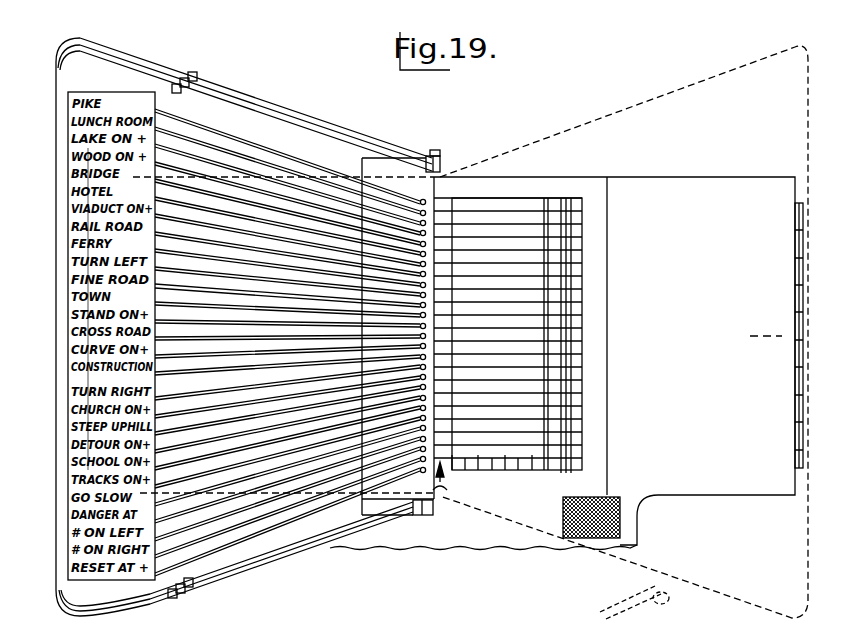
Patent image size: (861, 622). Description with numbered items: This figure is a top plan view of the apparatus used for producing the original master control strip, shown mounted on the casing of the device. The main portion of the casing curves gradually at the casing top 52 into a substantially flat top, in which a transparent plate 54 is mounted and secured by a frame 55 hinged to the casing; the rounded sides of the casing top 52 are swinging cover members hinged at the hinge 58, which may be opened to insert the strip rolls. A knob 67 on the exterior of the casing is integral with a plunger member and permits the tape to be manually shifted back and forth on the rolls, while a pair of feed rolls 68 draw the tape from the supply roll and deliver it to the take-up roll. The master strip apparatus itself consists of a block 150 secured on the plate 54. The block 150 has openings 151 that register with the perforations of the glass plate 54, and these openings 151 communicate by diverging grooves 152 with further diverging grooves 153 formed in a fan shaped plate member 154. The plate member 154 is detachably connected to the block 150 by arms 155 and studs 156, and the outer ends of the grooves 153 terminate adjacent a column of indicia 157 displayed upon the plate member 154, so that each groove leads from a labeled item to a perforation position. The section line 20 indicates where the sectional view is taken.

The section line 20- 20 is at (52, 337).
The casing top 52 is at (752, 176).
The transparent plate 54 is at (600, 313).
The frame 55 is at (606, 360).
The hinge 58 is at (800, 250).
The knob 67 is at (618, 525).
The feed rolls 68 is at (575, 250).
The block 150 is at (440, 175).
The openings 151 is at (427, 464).
The diverging grooves 152 is at (387, 188).
The diverging grooves 153 is at (260, 142).
The fan shaped plate member 154 is at (323, 148).
The arms 155 is at (227, 92).
The studs 156 is at (437, 172).
The indicia 157 is at (128, 95).